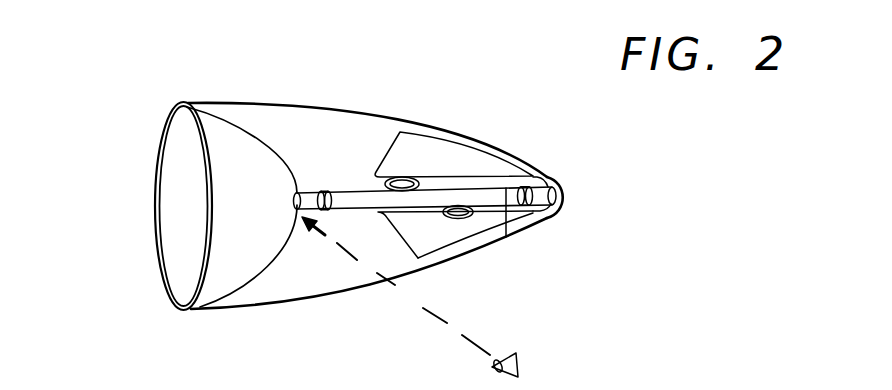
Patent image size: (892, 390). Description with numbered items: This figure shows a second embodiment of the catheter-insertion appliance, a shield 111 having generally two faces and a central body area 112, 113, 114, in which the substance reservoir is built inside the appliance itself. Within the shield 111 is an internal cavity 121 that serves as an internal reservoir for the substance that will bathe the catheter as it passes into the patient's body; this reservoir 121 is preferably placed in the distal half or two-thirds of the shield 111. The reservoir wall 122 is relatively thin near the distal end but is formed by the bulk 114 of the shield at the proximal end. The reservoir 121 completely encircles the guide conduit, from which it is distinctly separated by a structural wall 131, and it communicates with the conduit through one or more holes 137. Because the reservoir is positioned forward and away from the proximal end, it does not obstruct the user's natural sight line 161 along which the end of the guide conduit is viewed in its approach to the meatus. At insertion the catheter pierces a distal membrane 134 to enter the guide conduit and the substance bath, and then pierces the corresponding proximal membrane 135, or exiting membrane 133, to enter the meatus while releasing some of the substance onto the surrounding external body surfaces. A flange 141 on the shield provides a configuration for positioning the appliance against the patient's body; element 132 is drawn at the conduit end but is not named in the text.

The shield 111 is at (423, 84).
The central body area 112 is at (175, 262).
The central body area 113 is at (552, 214).
The bulk of the shield 114 is at (353, 132).
The internal cavity 121 is at (500, 167).
The reservoir wall 122 is at (496, 244).
The structural wall 131 is at (502, 236).
The shaft end 132 is at (557, 195).
The proximal or exiting membrane 133 is at (323, 192).
The distal membrane 134 is at (531, 188).
The proximal membrane 135 is at (297, 195).
The holes 137 is at (406, 178).
The flange 141 is at (241, 126).
The sight line 161 is at (437, 317).